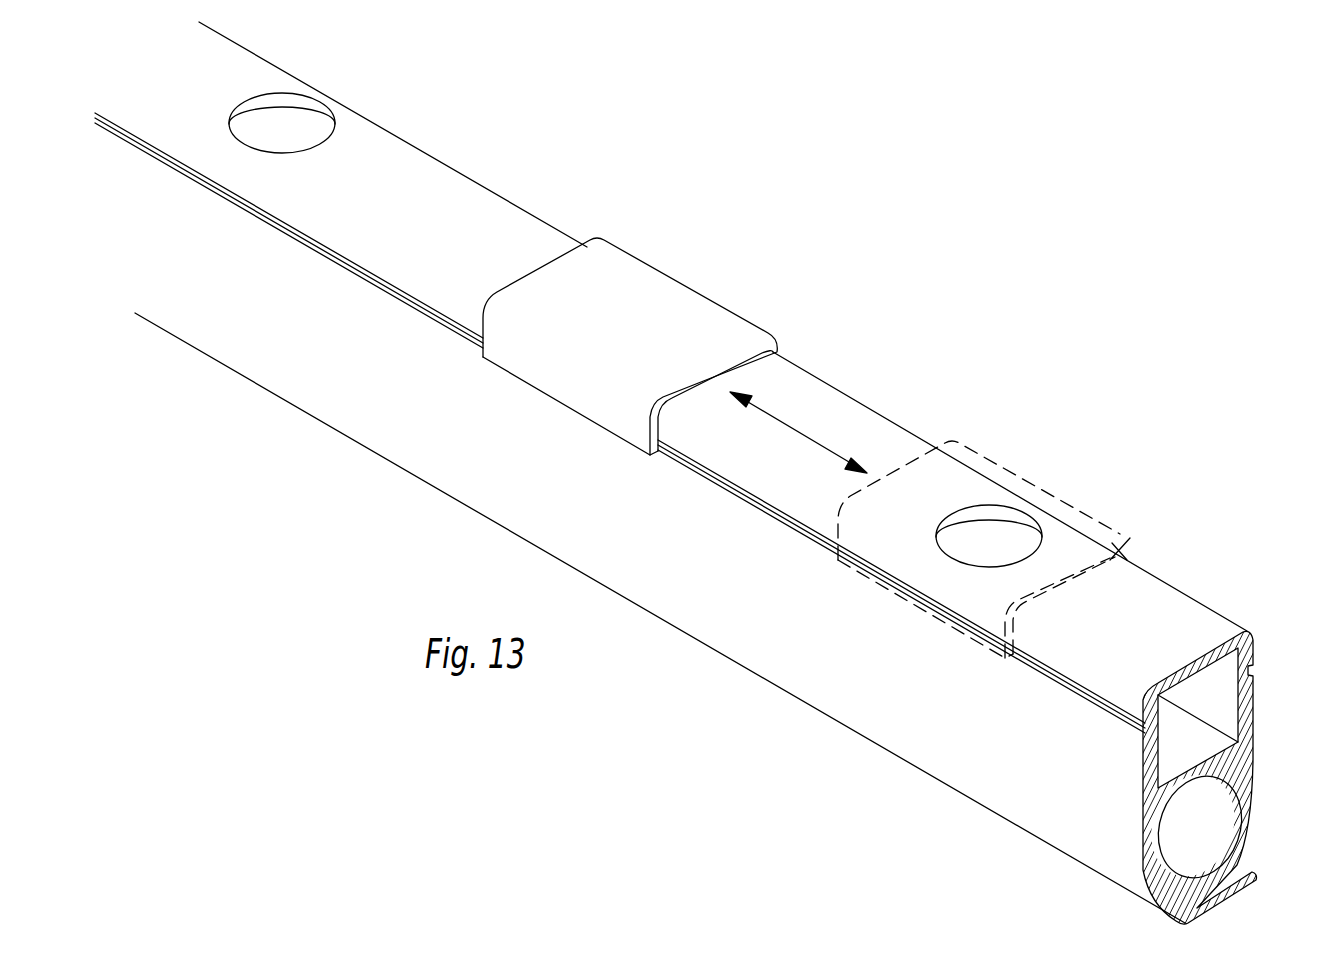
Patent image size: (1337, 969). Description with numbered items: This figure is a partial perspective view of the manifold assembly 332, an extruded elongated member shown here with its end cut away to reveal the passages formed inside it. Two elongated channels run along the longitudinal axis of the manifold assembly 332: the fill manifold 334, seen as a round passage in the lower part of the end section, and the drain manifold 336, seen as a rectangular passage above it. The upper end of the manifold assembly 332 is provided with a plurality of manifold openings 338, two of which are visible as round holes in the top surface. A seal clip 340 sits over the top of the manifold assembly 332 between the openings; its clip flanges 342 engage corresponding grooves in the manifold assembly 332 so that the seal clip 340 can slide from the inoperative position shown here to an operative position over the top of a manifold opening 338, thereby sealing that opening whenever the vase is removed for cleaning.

The manifold assembly 332 is at (1119, 552).
The fill manifold 334 is at (1217, 822).
The drain manifold 336 is at (1225, 703).
The manifold opening 338 is at (288, 128).
The seal clip 340 is at (662, 335).
The clip flange 342 is at (678, 462).